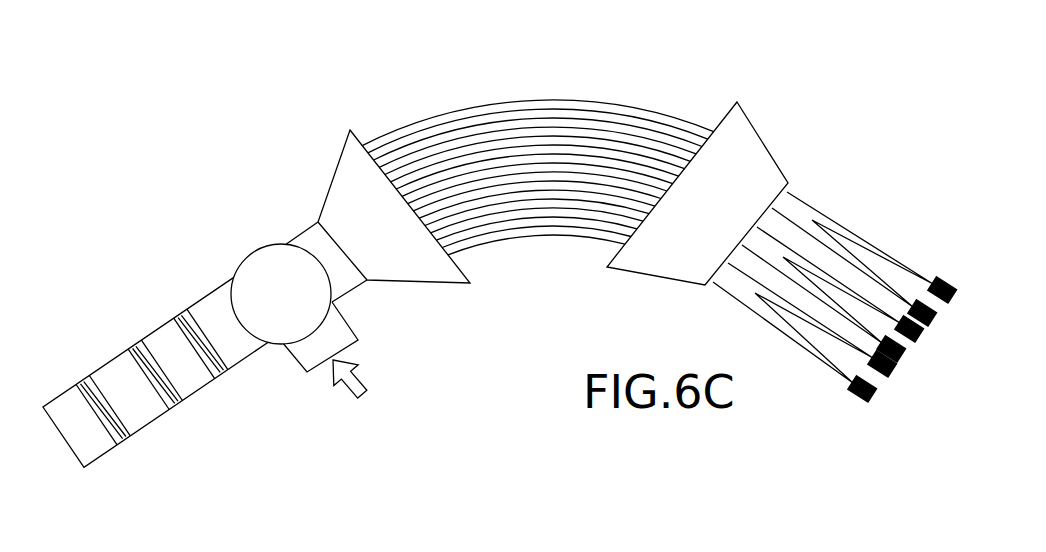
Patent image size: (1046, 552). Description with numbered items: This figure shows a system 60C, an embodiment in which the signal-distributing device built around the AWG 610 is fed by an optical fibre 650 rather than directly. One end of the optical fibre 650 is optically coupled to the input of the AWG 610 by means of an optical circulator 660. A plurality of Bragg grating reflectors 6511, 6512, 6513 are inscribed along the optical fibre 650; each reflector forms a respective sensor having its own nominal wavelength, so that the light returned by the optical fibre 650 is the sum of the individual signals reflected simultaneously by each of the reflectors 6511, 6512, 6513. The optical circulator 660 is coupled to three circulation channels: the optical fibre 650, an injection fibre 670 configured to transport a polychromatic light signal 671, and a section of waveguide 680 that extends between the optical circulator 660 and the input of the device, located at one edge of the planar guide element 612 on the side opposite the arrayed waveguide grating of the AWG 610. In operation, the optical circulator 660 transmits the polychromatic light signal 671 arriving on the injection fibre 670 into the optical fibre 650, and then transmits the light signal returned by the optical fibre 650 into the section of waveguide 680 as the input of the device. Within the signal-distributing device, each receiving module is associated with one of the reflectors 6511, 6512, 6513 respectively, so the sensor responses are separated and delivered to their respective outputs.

The system 60C is at (152, 140).
The AWG 610 is at (405, 100).
The planar guide element 612 is at (334, 176).
The optical fibre 650 is at (210, 294).
The Bragg grating reflector 6511 is at (217, 380).
The Bragg grating reflector 6512 is at (168, 415).
The Bragg grating reflector 6513 is at (118, 445).
The optical circulator 660 is at (252, 262).
The injection fibre 670 is at (340, 338).
The polychromatic light signal 671 is at (360, 392).
The section of waveguide 680 is at (347, 283).